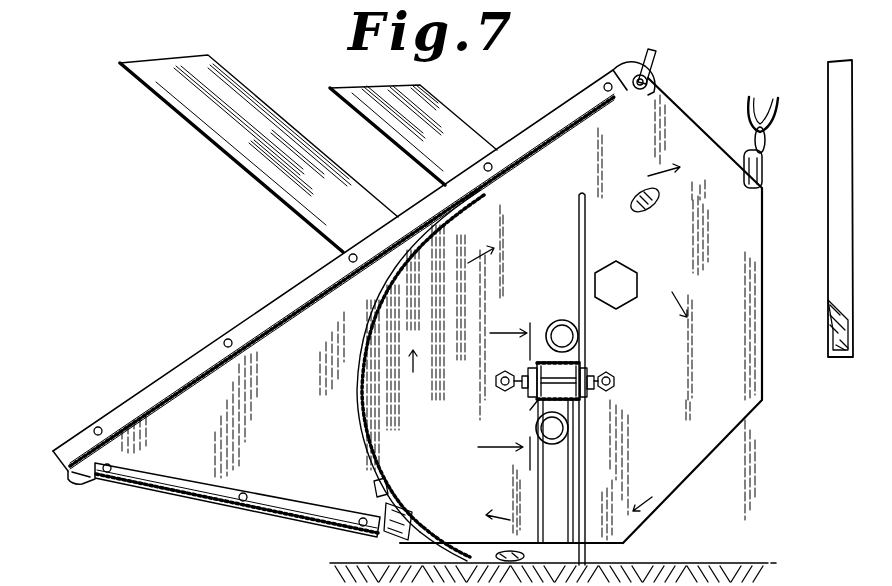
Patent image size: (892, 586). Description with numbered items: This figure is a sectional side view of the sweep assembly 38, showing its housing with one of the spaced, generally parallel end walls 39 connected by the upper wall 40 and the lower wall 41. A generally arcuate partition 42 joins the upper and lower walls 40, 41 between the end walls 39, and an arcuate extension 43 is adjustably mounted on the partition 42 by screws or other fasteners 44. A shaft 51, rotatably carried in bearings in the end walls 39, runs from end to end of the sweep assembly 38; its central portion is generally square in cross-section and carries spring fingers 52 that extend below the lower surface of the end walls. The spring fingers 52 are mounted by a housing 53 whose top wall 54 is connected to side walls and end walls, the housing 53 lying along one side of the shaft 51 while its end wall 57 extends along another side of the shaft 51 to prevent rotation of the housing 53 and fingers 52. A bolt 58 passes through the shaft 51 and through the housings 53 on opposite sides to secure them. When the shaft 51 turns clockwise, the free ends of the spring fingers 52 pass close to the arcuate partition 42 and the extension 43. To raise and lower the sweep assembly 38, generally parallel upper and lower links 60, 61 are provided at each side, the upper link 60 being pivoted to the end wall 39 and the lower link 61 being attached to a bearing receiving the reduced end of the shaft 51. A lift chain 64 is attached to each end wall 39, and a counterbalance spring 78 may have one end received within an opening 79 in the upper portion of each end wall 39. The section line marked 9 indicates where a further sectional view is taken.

The section line 9- 9 is at (504, 386).
The sweep assembly 38 is at (379, 551).
The end wall 39 is at (668, 478).
The upper wall 40 is at (213, 365).
The lower wall 41 is at (176, 498).
The arcuate partition 42 is at (357, 375).
The arcuate extension 43 is at (462, 505).
The fasteners 44 is at (376, 489).
The shaft 51 is at (579, 407).
The spring fingers 52 is at (577, 233).
The housing 53 is at (599, 361).
The top wall 54 is at (530, 367).
The end wall 57 is at (576, 352).
The bolt 58 is at (617, 383).
The upper link 60 is at (443, 107).
The lower link 61 is at (207, 128).
The lift chain 64 is at (764, 132).
The counterbalance spring 78 is at (657, 57).
The opening 79 is at (647, 87).